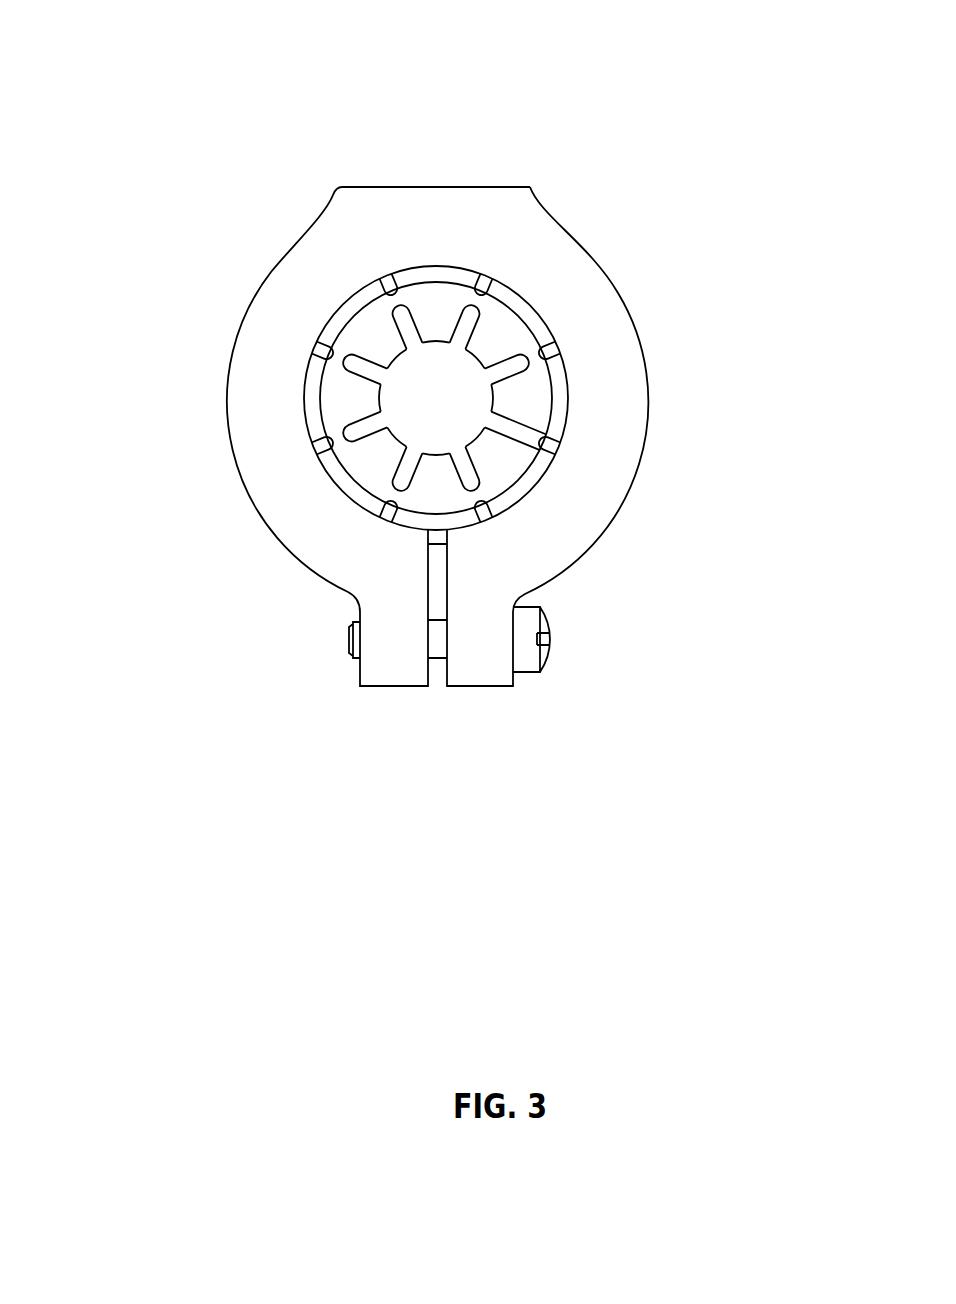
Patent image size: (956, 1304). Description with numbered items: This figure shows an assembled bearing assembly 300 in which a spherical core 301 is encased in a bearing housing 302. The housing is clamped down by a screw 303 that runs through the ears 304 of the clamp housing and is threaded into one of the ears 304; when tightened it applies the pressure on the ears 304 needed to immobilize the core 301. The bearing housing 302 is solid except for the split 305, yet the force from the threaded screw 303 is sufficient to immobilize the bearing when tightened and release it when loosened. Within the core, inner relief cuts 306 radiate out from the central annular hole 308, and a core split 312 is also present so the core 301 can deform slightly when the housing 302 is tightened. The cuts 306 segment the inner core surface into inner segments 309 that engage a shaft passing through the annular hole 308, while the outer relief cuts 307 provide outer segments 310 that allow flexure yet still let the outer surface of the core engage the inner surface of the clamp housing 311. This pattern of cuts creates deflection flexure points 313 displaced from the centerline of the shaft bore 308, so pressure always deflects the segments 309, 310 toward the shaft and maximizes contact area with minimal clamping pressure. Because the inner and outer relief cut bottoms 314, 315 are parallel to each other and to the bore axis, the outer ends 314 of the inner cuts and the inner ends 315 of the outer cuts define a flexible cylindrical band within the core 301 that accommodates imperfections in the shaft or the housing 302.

The bearing assembly 300 is at (288, 127).
The spherical core 301 is at (372, 338).
The bearing housing 302 is at (267, 333).
The screw 303 is at (347, 643).
The ears 304 is at (387, 687).
The split 305 is at (437, 687).
The inner relief cuts 306 is at (468, 478).
The outer relief cuts 307 is at (488, 518).
The central annular hole 308 is at (440, 393).
The inner segments 309 is at (490, 337).
The outer segments 310 is at (538, 332).
The inner surface of the clamp housing 311 is at (567, 398).
The core split 312 is at (548, 447).
The deflection flexure points 313 is at (475, 297).
The outer ends of the inner relief cuts 314 is at (343, 433).
The inner ends of the outer relief cuts 315 is at (327, 442).